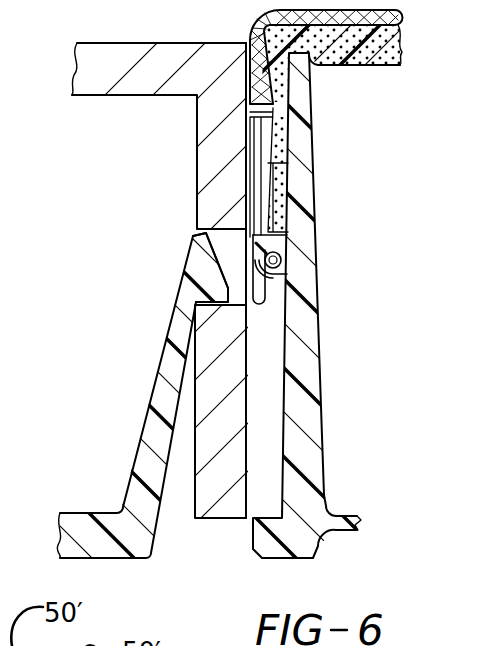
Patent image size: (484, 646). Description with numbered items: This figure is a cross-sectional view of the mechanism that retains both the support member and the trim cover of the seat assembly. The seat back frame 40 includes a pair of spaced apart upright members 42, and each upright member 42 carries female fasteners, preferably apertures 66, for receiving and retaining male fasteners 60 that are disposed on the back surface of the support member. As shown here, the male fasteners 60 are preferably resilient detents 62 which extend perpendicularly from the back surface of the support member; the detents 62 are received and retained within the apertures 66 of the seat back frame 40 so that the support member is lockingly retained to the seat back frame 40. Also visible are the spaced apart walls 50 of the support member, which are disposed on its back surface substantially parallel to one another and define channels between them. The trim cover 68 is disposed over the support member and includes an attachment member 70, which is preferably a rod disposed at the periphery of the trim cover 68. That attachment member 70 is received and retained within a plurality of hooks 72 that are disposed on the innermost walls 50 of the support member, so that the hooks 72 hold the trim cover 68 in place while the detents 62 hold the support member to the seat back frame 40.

The seat back frame 40 is at (138, 40).
The trim cover 68 is at (305, 10).
The apertures 66 is at (240, 254).
The resilient detents 62 is at (196, 256).
The attachment member 70 is at (288, 264).
The hooks 72 is at (257, 289).
The male fasteners 60 is at (158, 358).
The walls 50 is at (306, 409).
The upright members 42 is at (210, 487).